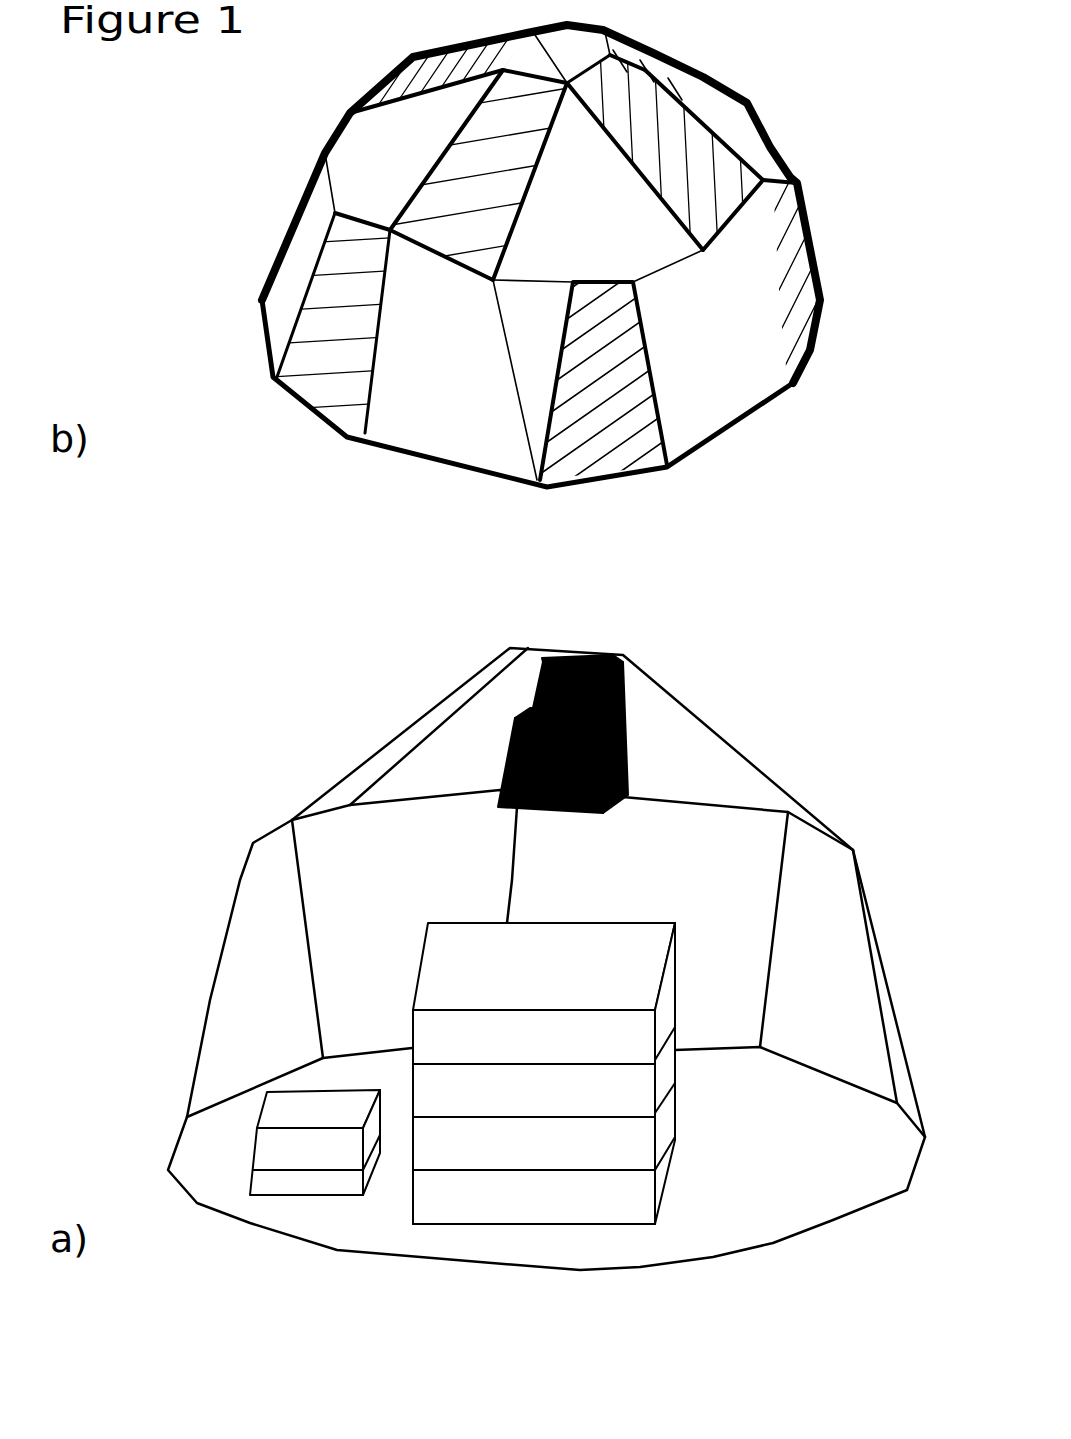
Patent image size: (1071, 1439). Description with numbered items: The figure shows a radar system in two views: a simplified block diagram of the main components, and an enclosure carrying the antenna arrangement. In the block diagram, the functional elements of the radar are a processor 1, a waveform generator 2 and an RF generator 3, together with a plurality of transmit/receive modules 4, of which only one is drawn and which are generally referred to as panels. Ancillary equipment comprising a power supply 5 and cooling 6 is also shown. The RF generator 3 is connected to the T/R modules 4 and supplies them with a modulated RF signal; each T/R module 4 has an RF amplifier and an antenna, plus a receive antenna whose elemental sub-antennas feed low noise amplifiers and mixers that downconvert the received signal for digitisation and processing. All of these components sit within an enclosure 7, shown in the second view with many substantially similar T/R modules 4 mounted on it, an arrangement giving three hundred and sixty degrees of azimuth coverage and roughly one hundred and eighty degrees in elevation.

The processor 1 is at (620, 1155).
The waveform generator 2 is at (475, 1103).
The RF generator 3 is at (427, 1027).
The transmit/receive (T/R) module 4 is at (577, 460).
The power supply 5 is at (580, 1208).
The cooling 6 is at (278, 1157).
The enclosure 7 is at (752, 413).